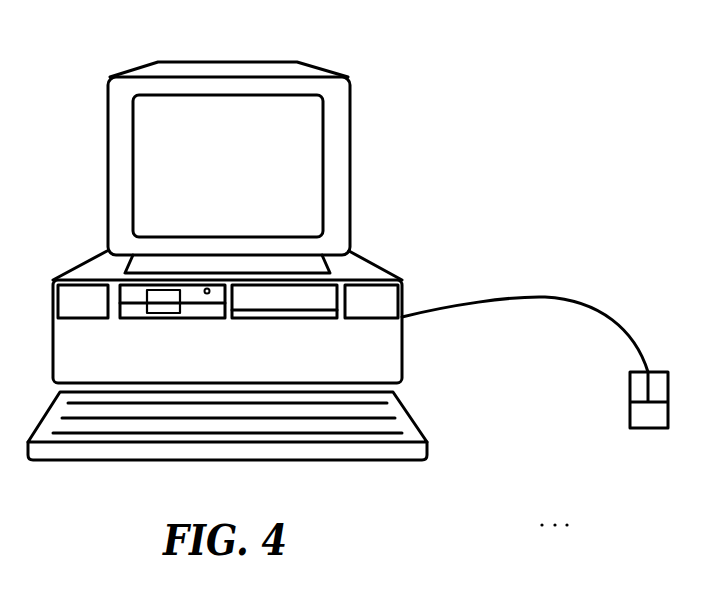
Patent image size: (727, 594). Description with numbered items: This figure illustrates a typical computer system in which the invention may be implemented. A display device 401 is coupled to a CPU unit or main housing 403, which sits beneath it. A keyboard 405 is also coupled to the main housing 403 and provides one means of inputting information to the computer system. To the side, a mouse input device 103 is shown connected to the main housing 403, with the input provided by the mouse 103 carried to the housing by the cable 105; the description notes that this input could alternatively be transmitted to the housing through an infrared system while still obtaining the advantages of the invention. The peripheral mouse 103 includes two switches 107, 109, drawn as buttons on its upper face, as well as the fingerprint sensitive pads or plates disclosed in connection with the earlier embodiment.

The display device 401 is at (108, 180).
The main housing 403 is at (405, 363).
The keyboard 405 is at (433, 438).
The cable 105 is at (567, 295).
The mouse input device 103 is at (630, 428).
The switch 107 is at (658, 382).
The switch 109 is at (637, 392).